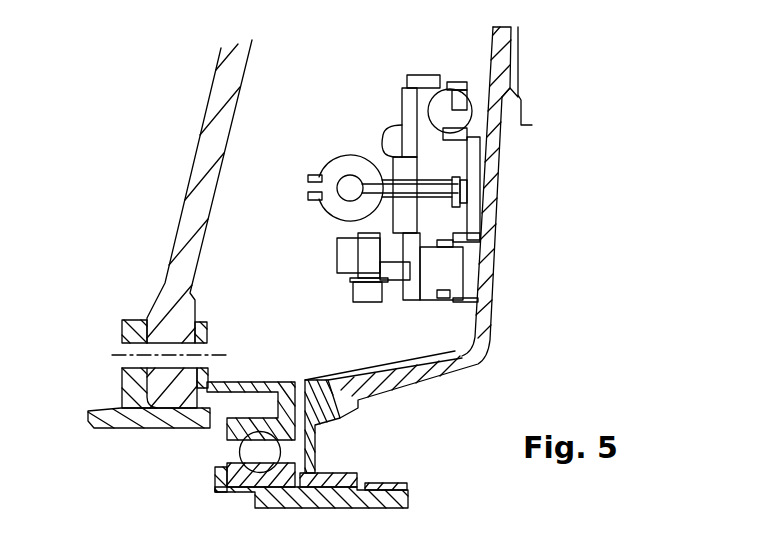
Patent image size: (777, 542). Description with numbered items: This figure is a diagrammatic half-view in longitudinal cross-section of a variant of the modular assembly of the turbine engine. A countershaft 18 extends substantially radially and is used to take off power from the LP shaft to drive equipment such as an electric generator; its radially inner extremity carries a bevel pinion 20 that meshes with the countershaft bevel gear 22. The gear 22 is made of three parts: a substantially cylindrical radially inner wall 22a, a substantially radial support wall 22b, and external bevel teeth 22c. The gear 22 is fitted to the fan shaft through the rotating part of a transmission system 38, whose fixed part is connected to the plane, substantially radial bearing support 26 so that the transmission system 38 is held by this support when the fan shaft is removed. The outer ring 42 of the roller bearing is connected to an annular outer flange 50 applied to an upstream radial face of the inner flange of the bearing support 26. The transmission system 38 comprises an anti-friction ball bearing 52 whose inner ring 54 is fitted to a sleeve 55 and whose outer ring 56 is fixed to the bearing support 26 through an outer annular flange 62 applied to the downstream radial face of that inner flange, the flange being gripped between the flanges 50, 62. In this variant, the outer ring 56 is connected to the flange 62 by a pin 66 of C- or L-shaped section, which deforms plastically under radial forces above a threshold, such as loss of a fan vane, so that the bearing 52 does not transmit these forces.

The countershaft 18 is at (523, 110).
The bevel pinion 20 is at (457, 362).
The countershaft bevel gear 22 is at (385, 446).
The radially inner wall 22a is at (333, 488).
The support wall 22b is at (306, 440).
The external bevel teeth 22c is at (330, 380).
The bearing support 26 is at (193, 163).
The transmission system 38 is at (253, 322).
The outer ring 42 is at (105, 418).
The outer flange 50 is at (122, 320).
The anti-friction bearing 52 is at (305, 364).
The inner ring 54 is at (232, 468).
The sleeve 55 is at (407, 490).
The outer ring 56 is at (403, 472).
The outer annular flange 62 is at (208, 332).
The pin 66 is at (235, 382).